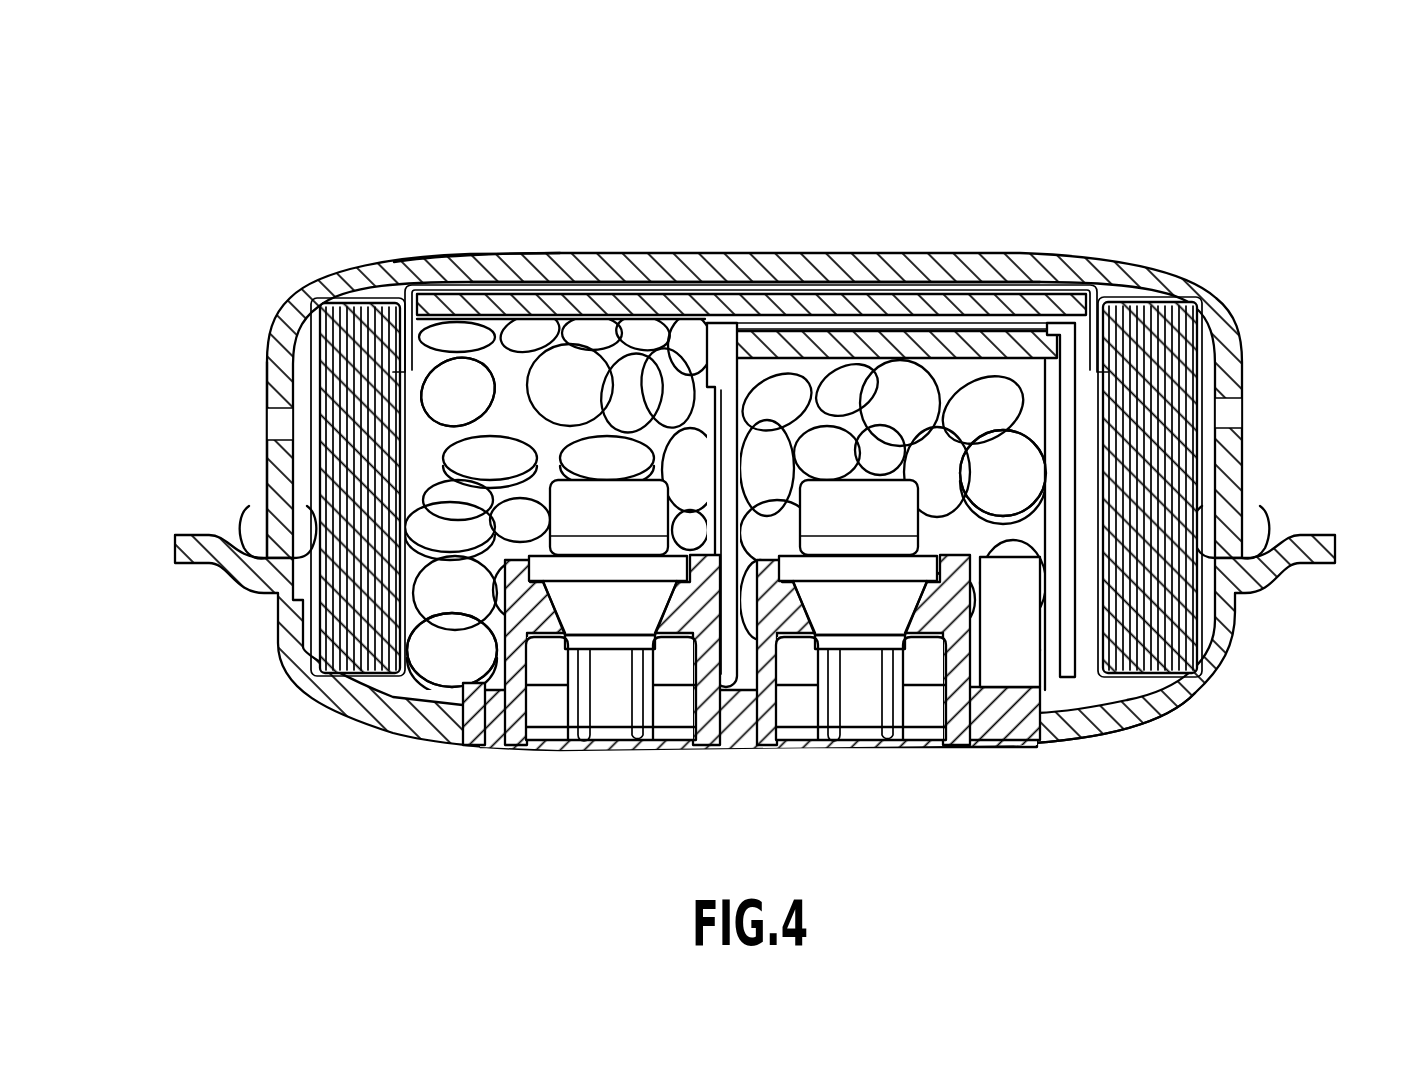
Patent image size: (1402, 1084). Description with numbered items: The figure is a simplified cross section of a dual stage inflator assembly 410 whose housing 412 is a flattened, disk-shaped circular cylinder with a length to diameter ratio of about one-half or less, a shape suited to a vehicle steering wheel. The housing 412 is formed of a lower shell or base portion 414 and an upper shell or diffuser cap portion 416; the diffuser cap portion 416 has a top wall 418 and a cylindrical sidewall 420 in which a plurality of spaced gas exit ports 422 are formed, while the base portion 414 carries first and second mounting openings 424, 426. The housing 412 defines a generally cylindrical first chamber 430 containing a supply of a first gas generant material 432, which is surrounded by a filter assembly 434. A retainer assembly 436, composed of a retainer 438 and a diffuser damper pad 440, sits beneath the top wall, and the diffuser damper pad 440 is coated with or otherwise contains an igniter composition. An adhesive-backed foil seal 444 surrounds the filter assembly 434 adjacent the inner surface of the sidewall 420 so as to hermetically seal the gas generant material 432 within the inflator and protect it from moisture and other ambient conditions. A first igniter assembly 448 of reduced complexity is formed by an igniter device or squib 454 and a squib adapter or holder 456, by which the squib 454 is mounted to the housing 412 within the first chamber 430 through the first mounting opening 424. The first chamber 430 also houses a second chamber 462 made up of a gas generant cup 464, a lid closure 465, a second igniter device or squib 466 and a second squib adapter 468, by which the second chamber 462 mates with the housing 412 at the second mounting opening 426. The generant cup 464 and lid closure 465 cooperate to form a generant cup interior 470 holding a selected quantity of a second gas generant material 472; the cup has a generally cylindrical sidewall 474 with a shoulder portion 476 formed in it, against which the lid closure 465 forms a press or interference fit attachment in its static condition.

The inflator assembly 410 is at (1125, 222).
The housing 412 is at (1207, 280).
The lower shell or base portion 414 is at (1165, 700).
The upper shell or diffuser cap portion 416 is at (500, 258).
The top wall 418 is at (718, 284).
The cylindrical sidewall 420 is at (268, 471).
The gas exit ports 422 is at (282, 432).
The first mounting opening 424 is at (462, 722).
The second mounting opening 426 is at (1068, 712).
The first chamber 430 is at (407, 690).
The first gas generant material 432 is at (455, 375).
The filter assembly 434 is at (353, 603).
The retainer assembly 436 is at (455, 278).
The retainer 438 is at (798, 314).
The diffuser damper pad 440 is at (583, 302).
The adhesive-backed foil seal 444 is at (272, 366).
The first igniter assembly 448 is at (853, 699).
The igniter device or squib 454 is at (615, 600).
The squib adapter or holder 456 is at (720, 713).
The second chamber 462 is at (1073, 570).
The gas generant cup 464 is at (1150, 650).
The lid closure 465 is at (875, 342).
The second igniter device or squib 466 is at (865, 595).
The second squib adapter 468 is at (990, 705).
The generant cup interior 470 is at (712, 355).
The second gas generant material 472 is at (1017, 483).
The cylindrical sidewall 474 is at (1105, 372).
The shoulder portion 476 is at (1045, 340).